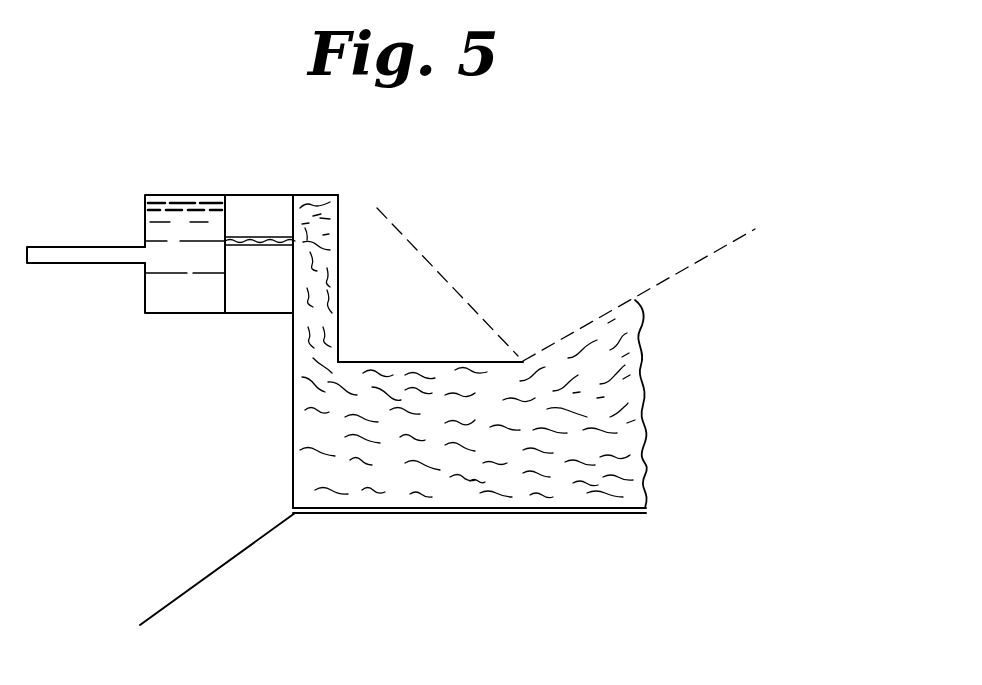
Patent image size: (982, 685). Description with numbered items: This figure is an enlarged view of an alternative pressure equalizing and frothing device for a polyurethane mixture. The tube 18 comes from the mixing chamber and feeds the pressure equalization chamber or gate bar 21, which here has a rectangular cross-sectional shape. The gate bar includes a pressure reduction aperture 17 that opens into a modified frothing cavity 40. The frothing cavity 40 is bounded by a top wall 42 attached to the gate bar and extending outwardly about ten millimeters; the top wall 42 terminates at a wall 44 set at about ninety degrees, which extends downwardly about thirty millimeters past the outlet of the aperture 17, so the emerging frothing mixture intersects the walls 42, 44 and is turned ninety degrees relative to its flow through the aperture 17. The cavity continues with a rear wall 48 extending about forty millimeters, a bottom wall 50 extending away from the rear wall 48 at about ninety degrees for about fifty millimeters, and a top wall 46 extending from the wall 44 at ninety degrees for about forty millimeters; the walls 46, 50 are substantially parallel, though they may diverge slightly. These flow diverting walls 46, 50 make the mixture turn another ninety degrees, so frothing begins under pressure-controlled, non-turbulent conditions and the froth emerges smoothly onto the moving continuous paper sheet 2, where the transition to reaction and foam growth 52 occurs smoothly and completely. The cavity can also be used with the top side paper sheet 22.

The continuous paper sheet 2 is at (200, 583).
The pressure reduction aperture 17 is at (258, 238).
The tube 18 is at (86, 255).
The pressure equalization chamber 21 is at (188, 203).
The top side paper sheet 22 is at (418, 249).
The frothing cavity 40 is at (262, 402).
The top wall 42 is at (317, 195).
The wall 44 is at (340, 284).
The top wall 46 is at (395, 361).
The rear wall 48 is at (295, 462).
The bottom wall 50 is at (467, 508).
The foam growth 52 is at (557, 468).